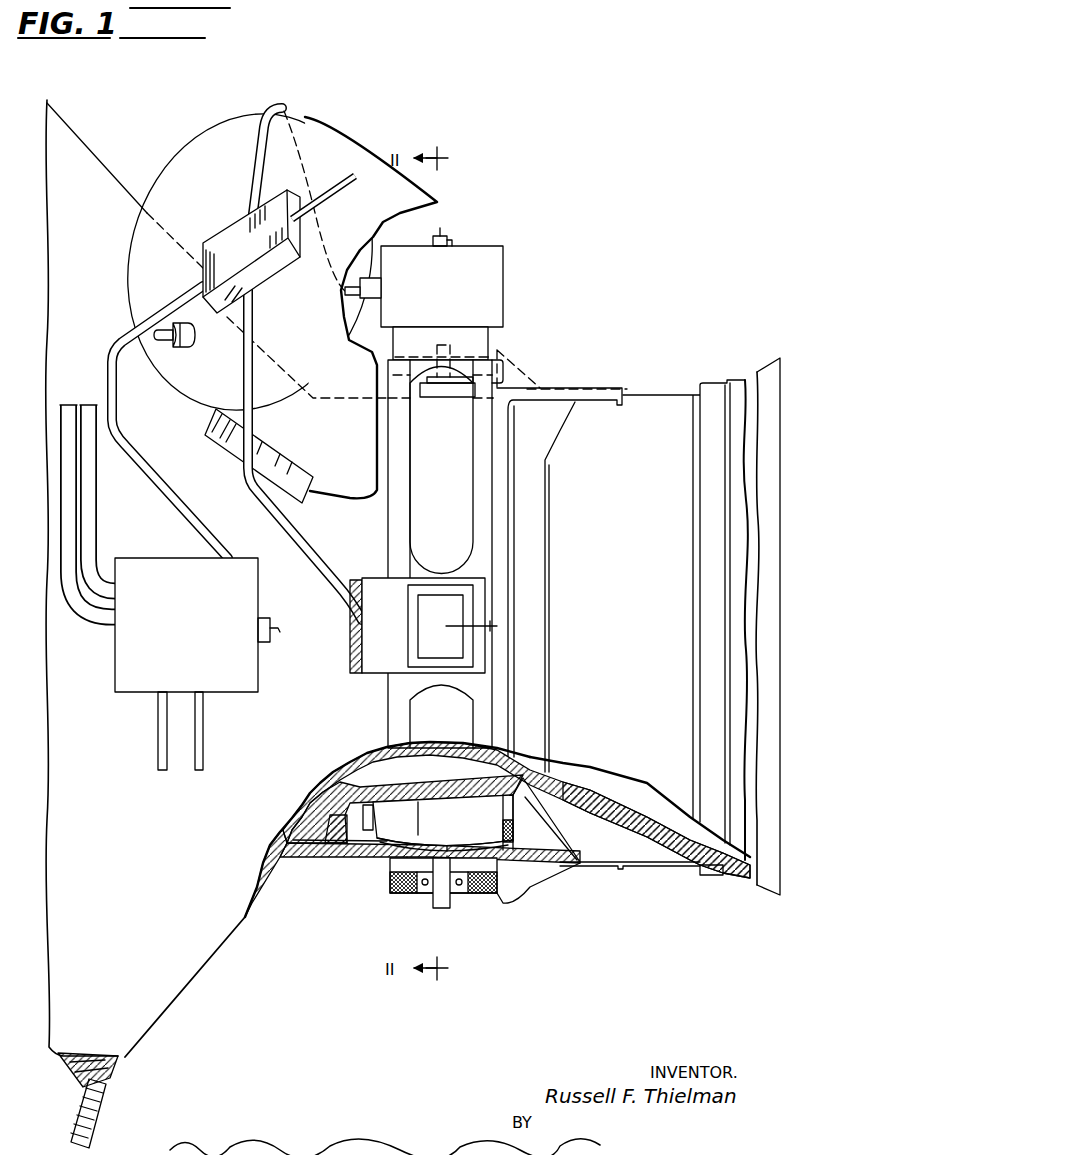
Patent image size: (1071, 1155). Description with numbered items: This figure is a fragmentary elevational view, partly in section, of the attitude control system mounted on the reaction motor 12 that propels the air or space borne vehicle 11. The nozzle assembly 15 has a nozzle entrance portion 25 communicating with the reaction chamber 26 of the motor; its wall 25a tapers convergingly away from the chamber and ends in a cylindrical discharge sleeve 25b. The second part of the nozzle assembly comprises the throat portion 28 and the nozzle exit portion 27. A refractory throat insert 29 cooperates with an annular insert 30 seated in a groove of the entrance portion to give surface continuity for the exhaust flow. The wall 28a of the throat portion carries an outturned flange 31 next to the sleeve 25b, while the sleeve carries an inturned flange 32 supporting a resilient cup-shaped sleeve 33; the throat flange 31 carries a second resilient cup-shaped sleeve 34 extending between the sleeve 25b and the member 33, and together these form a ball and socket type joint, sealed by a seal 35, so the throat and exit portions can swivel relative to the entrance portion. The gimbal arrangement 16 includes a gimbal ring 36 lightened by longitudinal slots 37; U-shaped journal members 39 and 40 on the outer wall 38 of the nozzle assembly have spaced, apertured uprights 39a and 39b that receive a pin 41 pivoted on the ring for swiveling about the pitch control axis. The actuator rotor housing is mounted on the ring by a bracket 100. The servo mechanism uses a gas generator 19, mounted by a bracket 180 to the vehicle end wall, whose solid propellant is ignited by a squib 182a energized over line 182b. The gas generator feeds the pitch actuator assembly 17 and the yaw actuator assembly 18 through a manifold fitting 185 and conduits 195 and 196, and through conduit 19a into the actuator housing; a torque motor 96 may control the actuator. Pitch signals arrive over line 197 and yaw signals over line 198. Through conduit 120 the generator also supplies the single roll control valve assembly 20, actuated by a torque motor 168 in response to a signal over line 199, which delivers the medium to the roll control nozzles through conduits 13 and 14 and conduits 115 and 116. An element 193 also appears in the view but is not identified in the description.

The vehicle 11 is at (100, 1123).
The reaction motor 12 is at (62, 1072).
The conduit 13 is at (70, 541).
The conduit 14 is at (90, 500).
The nozzle assembly 15 is at (659, 369).
The gimbal arrangement 16 is at (499, 348).
The actuator assembly 17 is at (496, 230).
The actuator assembly 18 is at (370, 575).
The gas generator 19 is at (333, 123).
The conduit 19a is at (370, 298).
The single valve assembly 20 is at (233, 697).
The nozzle entrance portion 25 is at (205, 923).
The wall 25a is at (287, 865).
The discharge sleeve 25b is at (358, 873).
The reaction chamber 26 is at (108, 1078).
The nozzle exit portion 27 is at (682, 822).
The throat portion 28 is at (390, 748).
The wall 28a is at (562, 764).
The throat insert 29 is at (370, 768).
The annular insert 30 is at (340, 830).
The outturned flange 31 is at (350, 812).
The inturned flange 32 is at (495, 827).
The cup-shaped sleeve 33 is at (510, 833).
The cup-shaped sleeve 34 is at (443, 820).
The seal 35 is at (400, 840).
The gimbal ring 36 is at (395, 527).
The longitudinal slots 37 is at (465, 488).
The outer wall 38 is at (632, 867).
The U-shaped journal member 39 is at (515, 900).
The upright 39a is at (486, 367).
The upright 39b is at (522, 385).
The U-shaped journal member 40 is at (528, 385).
The pin 41 is at (441, 908).
The torque motor 96 is at (450, 240).
The bracket 100 is at (402, 343).
The conduit 115 is at (162, 711).
The conduit 116 is at (198, 738).
The conduit 120 is at (168, 487).
The torque motor 168 is at (273, 637).
The bracket 180 is at (270, 453).
The squib 182a is at (192, 348).
The line 182b is at (158, 335).
The manifold fitting 185 is at (222, 245).
The rod 193 is at (337, 192).
The conduit 195 is at (257, 143).
The conduit 196 is at (317, 580).
The line 197 is at (443, 232).
The line 198 is at (497, 622).
The line 199 is at (280, 628).